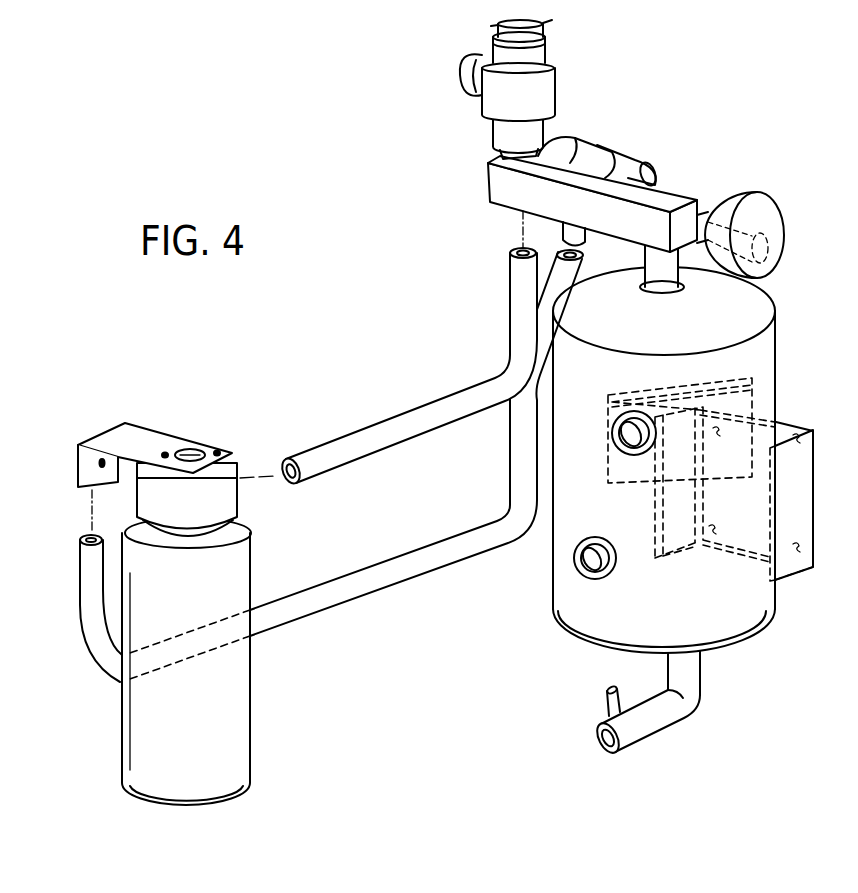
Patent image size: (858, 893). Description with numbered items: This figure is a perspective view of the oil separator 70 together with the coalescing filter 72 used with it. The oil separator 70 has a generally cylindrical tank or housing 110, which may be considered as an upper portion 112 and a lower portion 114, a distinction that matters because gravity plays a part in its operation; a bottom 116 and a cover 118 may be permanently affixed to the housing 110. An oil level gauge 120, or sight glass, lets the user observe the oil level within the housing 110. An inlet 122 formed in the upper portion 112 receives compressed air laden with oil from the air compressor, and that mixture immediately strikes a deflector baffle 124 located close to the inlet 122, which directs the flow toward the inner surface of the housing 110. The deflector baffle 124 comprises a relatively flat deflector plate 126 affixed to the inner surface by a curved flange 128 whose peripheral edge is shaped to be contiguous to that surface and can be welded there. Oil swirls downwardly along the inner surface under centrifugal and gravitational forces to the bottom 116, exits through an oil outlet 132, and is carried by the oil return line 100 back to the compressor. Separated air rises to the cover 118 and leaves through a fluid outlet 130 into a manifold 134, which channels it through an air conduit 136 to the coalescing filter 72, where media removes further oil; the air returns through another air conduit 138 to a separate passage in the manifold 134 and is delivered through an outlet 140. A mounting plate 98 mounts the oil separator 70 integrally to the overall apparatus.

The oil separator 70 is at (698, 464).
The coalescing filter 72 is at (242, 698).
The mounting plate 98 is at (797, 428).
The oil return line 100 is at (695, 704).
The housing 110 is at (676, 617).
The upper portion 112 is at (770, 385).
The lower portion 114 is at (753, 585).
The bottom 116 is at (748, 637).
The cover 118 is at (760, 308).
The oil level gauge 120 is at (590, 580).
The inlet 122 is at (613, 417).
The deflector baffle 124 is at (603, 480).
The deflector plate 126 is at (641, 492).
The curved flange 128 is at (690, 382).
The fluid outlet 130 is at (676, 272).
The oil outlet 132 is at (700, 660).
The manifold 134 is at (588, 178).
The air conduit 136 is at (403, 420).
The air conduit 138 is at (370, 580).
The outlet 140 is at (548, 94).